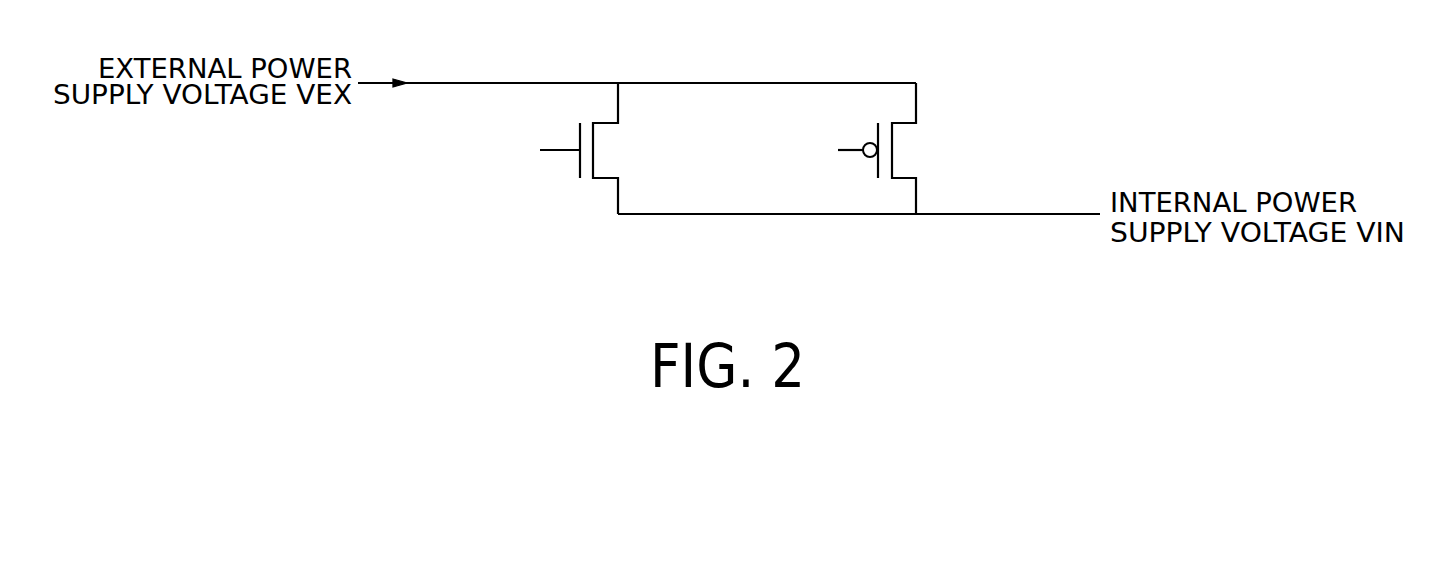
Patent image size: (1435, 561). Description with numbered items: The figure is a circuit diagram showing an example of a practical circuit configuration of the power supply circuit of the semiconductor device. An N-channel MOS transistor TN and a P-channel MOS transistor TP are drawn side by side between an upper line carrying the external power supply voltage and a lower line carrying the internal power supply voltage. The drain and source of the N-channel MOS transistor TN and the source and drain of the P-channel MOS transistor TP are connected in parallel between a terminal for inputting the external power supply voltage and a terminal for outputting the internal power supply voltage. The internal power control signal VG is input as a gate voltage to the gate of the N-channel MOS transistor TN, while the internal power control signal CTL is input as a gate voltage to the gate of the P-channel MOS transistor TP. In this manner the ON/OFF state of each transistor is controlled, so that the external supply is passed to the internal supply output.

The N-channel MOS transistor TN is at (610, 150).
The P-channel MOS transistor TP is at (905, 150).
The internal power control signal VG is at (539, 151).
The internal power control signal CTL is at (824, 151).